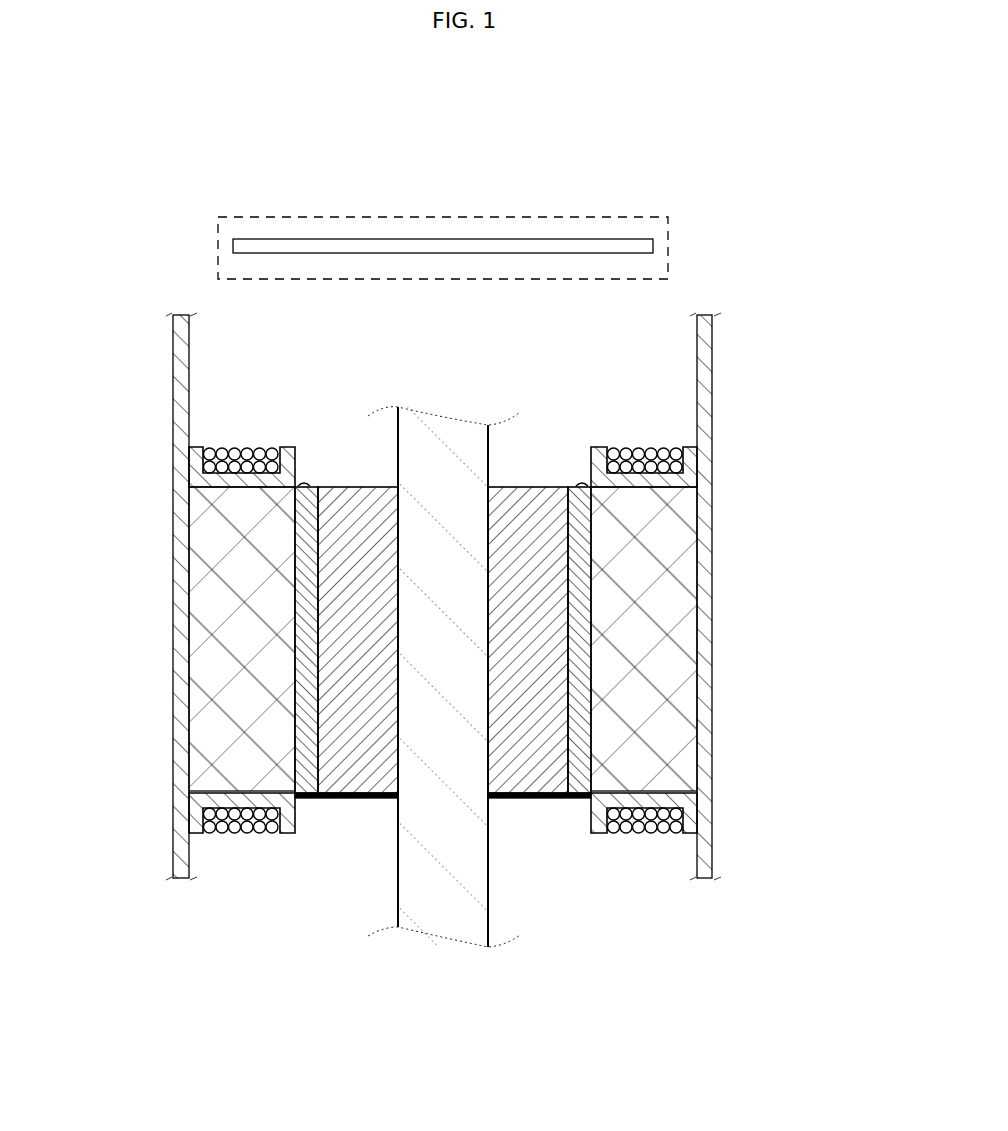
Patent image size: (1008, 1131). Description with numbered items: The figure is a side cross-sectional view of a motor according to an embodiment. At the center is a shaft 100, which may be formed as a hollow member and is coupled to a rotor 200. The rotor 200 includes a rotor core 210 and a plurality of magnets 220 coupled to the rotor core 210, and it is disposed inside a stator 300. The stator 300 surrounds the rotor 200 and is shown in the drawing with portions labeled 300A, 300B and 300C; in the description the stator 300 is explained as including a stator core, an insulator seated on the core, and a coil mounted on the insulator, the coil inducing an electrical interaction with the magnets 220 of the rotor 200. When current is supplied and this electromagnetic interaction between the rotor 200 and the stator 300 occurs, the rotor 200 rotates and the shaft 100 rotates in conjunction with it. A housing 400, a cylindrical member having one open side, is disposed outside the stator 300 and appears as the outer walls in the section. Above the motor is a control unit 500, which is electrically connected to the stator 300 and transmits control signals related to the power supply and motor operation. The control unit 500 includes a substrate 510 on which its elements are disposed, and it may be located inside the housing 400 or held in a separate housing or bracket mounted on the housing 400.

The shaft 100 is at (396, 887).
The rotor 200 is at (579, 640).
The rotor core 210 is at (525, 703).
The magnets 220 is at (580, 640).
The stator 300 is at (530, 640).
The stator core 300A is at (683, 550).
The coil 300B is at (683, 462).
The bobbin 300C is at (690, 483).
The housing 400 is at (168, 556).
The control unit 500 is at (556, 210).
The substrate 510 is at (329, 237).